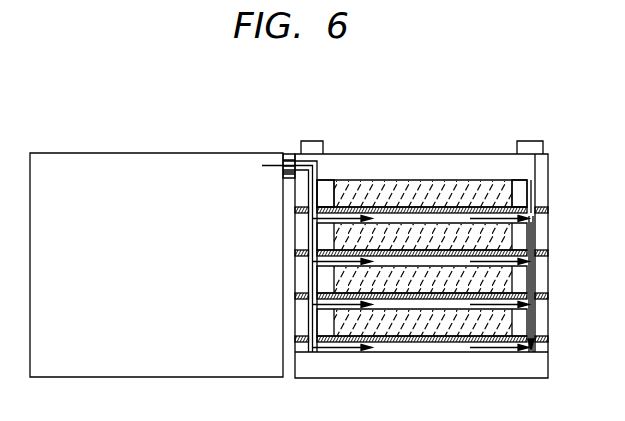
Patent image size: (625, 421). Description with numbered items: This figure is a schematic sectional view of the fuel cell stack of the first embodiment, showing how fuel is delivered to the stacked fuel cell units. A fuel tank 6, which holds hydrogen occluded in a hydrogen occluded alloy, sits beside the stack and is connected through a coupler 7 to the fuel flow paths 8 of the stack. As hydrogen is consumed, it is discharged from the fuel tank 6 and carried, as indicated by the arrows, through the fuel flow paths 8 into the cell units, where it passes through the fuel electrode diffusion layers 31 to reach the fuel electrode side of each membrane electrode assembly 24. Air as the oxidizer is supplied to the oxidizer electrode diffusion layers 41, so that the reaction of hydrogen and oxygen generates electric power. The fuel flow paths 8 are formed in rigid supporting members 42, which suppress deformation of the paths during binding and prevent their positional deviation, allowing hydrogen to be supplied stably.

The fuel tank 6 is at (92, 163).
The coupler 7 is at (288, 153).
The fuel flow paths 8 is at (315, 325).
The membrane electrode assembly 24 is at (520, 203).
The fuel electrode diffusion layer 31 is at (450, 216).
The oxidizer electrode diffusion layer 41 is at (427, 190).
The rigid supporting members 42 is at (327, 185).